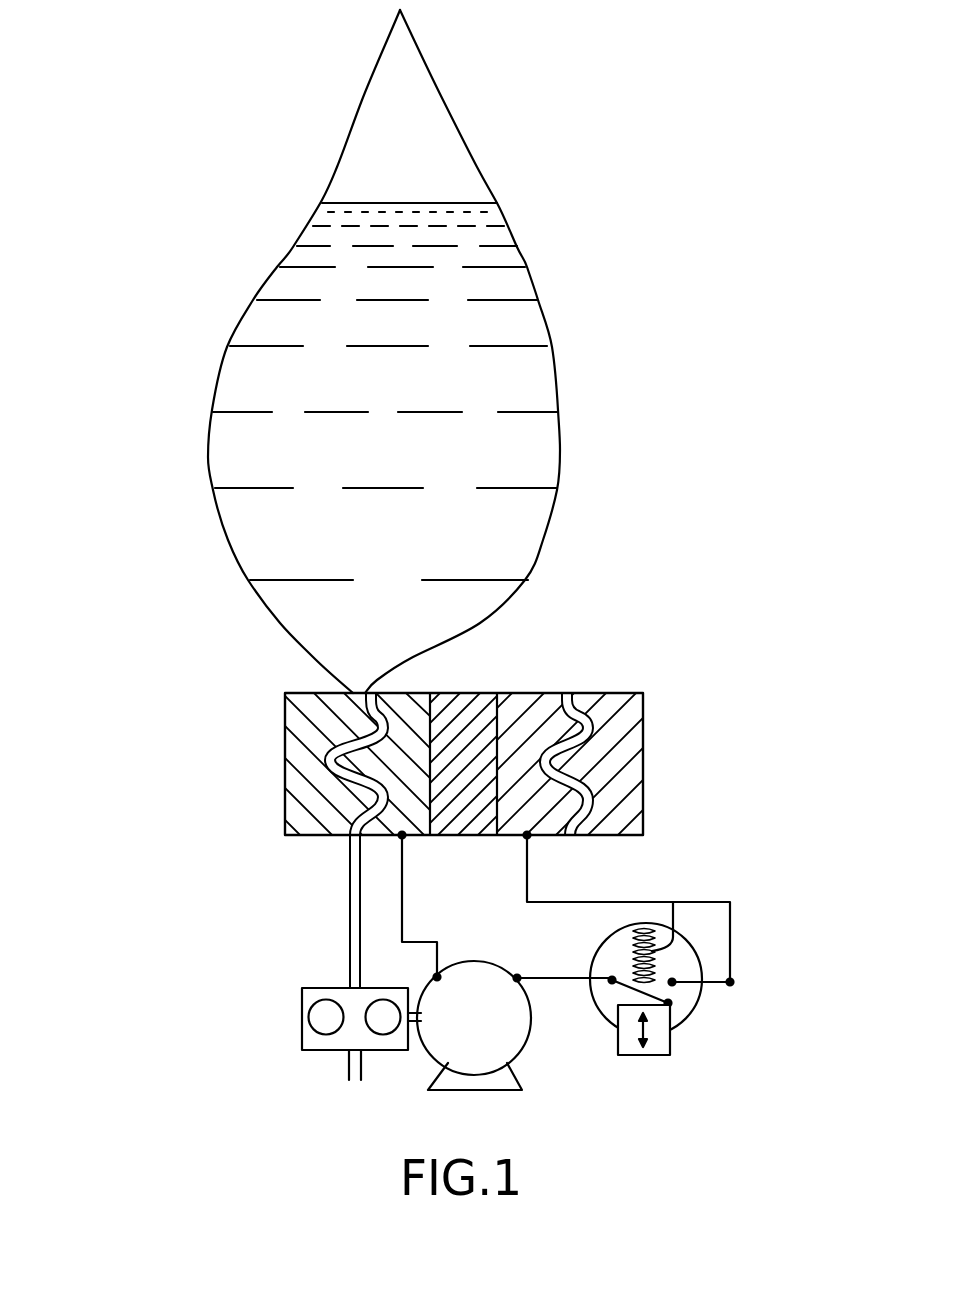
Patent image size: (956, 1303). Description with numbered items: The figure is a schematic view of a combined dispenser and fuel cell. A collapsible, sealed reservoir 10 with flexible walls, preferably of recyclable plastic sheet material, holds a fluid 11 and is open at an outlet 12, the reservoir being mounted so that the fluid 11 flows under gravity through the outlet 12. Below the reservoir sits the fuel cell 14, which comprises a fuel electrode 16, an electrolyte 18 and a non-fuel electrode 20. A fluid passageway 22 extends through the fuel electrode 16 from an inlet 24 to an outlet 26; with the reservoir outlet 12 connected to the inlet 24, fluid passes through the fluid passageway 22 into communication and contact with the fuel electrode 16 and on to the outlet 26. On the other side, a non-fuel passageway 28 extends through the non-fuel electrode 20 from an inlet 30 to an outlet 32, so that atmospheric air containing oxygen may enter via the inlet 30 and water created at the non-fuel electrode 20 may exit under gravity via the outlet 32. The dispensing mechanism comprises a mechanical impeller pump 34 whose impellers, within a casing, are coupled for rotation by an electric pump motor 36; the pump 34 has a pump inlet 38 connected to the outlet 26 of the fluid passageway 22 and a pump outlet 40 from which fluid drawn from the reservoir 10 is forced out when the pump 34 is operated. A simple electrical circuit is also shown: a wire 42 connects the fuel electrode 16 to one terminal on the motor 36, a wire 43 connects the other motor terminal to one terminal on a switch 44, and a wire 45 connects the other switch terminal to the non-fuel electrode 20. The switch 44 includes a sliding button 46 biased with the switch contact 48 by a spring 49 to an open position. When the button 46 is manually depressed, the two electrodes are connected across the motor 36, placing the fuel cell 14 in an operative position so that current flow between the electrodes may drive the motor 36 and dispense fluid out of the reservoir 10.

The reservoir 10 is at (525, 255).
The fluid 11 is at (488, 302).
The outlet 12 is at (367, 692).
The fuel cell 14 is at (406, 817).
The fuel electrode 16 is at (293, 720).
The electrolyte 18 is at (486, 693).
The non-fuel electrode 20 is at (635, 728).
The fluid passageway 22 is at (320, 757).
The inlet 24 is at (357, 712).
The outlet 26 is at (352, 830).
The non-fuel passageway 28 is at (597, 754).
The inlet 30 is at (571, 695).
The outlet 32 is at (567, 837).
The mechanical impeller pump 34 is at (311, 999).
The electric pump motor 36 is at (460, 1063).
The pump inlet 38 is at (336, 988).
The pump outlet 40 is at (347, 1078).
The wire 42 is at (402, 887).
The wire 43 is at (560, 978).
The switch 44 is at (713, 1014).
The wire 45 is at (730, 935).
The sliding button 46 is at (635, 1057).
The switch contact 48 is at (625, 992).
The spring 49 is at (673, 902).